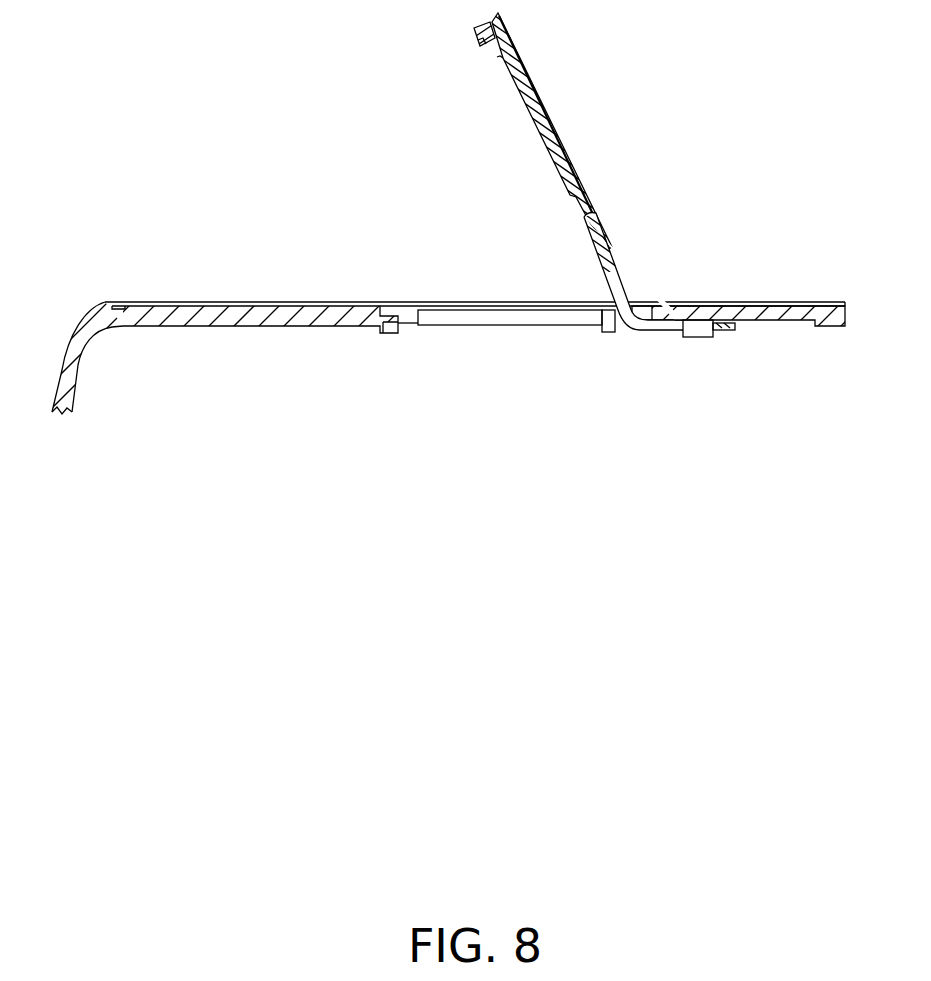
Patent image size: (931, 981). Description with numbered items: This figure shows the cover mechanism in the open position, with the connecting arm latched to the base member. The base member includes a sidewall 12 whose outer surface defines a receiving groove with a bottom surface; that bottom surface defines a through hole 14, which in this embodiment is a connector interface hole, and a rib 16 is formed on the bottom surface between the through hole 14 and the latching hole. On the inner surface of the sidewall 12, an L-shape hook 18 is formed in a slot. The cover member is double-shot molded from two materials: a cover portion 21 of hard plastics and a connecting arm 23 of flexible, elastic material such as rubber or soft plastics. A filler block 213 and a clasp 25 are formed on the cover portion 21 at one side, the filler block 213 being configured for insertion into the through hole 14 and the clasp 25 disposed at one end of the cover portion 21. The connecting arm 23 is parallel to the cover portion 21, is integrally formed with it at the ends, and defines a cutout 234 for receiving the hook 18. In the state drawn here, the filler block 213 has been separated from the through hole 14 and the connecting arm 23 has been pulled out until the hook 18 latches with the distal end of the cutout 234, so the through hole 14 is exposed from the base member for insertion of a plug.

The sidewall 12 is at (240, 318).
The through hole 14 is at (492, 318).
The rib 16 is at (609, 313).
The L-shape hook 18 is at (698, 334).
The cover portion 21 is at (523, 76).
The connecting arm 23 is at (723, 328).
The clasp 25 is at (477, 36).
The filler block 213 is at (500, 62).
The cutout 234 is at (617, 288).